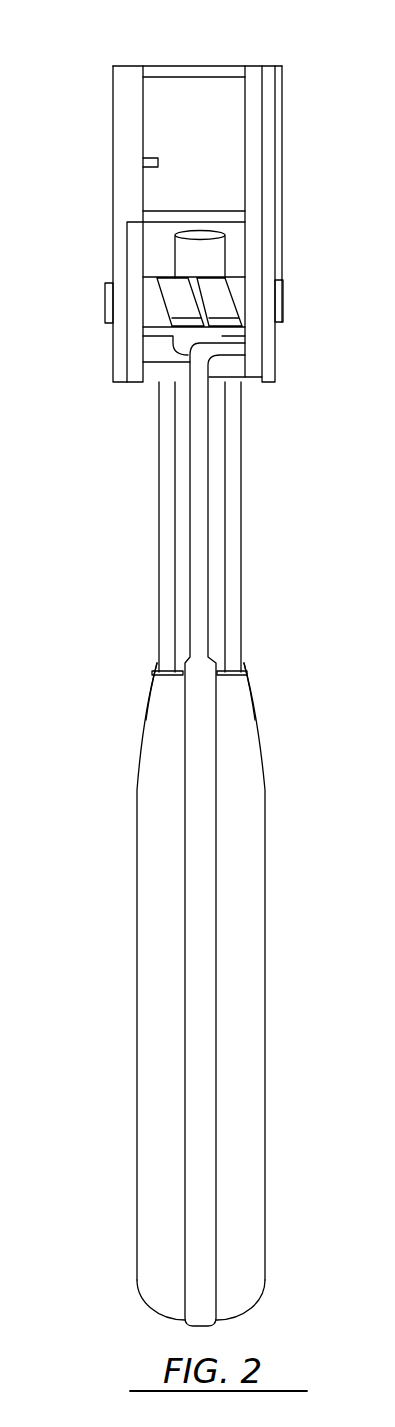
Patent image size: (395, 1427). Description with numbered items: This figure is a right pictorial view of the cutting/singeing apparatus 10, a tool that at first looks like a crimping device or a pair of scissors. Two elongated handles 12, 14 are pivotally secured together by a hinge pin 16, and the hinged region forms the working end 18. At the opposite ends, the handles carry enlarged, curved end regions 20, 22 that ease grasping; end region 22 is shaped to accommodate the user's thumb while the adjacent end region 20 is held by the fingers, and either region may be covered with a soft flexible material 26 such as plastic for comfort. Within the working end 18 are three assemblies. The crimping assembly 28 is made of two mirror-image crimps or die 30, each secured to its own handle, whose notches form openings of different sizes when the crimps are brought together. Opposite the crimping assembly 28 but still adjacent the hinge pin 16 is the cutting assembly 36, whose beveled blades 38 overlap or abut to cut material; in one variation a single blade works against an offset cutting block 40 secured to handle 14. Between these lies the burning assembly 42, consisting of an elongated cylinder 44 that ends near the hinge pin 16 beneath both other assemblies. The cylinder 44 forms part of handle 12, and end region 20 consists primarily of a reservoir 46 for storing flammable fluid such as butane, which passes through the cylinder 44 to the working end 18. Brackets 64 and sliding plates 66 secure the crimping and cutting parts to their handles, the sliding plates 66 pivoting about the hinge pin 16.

The cutting/singeing apparatus 10 is at (100, 628).
The elongated handle 12 is at (158, 590).
The elongated handle 14 is at (210, 582).
The hinge pin 16 is at (108, 305).
The working end 18 is at (310, 177).
The end region 20 is at (137, 1138).
The end region 22 is at (185, 1227).
The soft flexible material 26 is at (157, 920).
The crimping assembly 28 is at (110, 167).
The crimp or die 30 is at (128, 116).
The cutting assembly 36 is at (284, 115).
The beveled blade 38 is at (278, 83).
The cutting block 40 is at (247, 66).
The burning assembly 42 is at (190, 188).
The elongated cylinder 44 is at (210, 231).
The reservoir 46 is at (137, 1035).
The bracket 64 is at (188, 66).
The sliding plate 66 is at (112, 362).